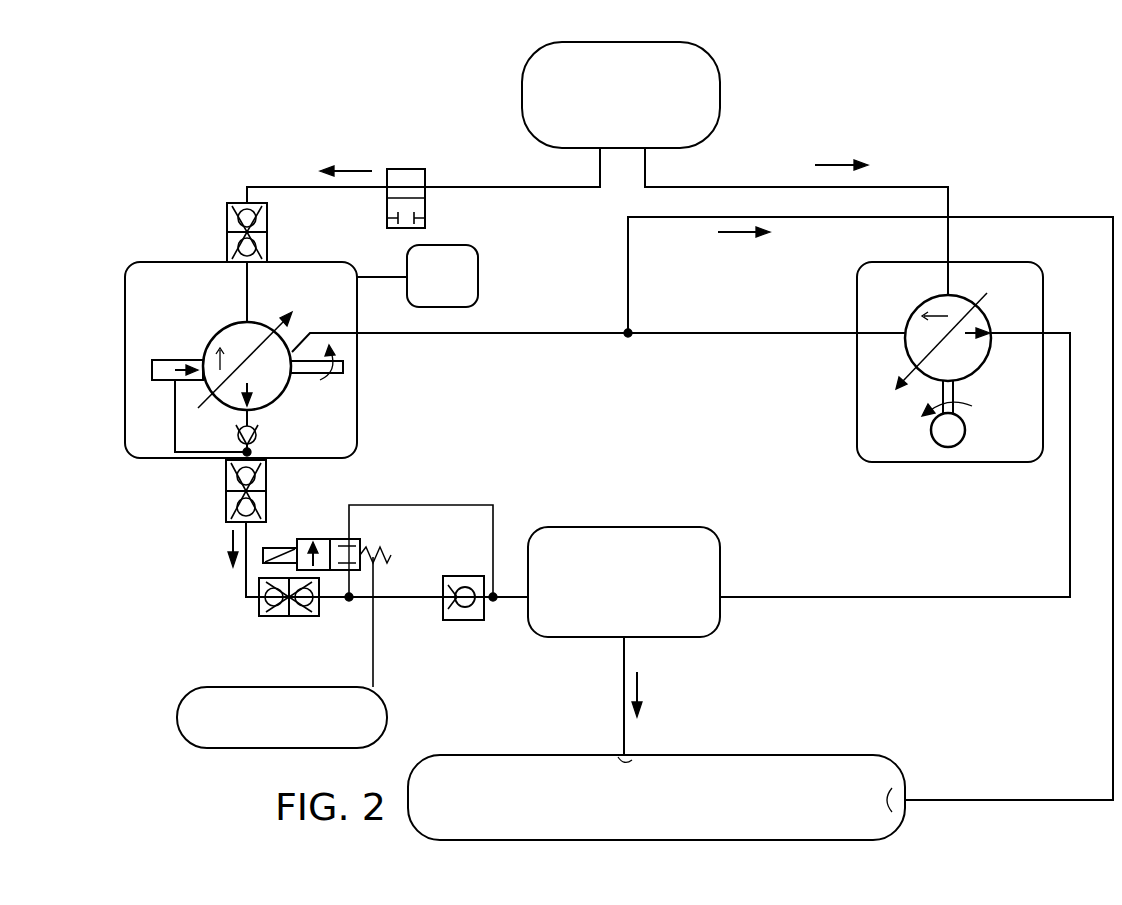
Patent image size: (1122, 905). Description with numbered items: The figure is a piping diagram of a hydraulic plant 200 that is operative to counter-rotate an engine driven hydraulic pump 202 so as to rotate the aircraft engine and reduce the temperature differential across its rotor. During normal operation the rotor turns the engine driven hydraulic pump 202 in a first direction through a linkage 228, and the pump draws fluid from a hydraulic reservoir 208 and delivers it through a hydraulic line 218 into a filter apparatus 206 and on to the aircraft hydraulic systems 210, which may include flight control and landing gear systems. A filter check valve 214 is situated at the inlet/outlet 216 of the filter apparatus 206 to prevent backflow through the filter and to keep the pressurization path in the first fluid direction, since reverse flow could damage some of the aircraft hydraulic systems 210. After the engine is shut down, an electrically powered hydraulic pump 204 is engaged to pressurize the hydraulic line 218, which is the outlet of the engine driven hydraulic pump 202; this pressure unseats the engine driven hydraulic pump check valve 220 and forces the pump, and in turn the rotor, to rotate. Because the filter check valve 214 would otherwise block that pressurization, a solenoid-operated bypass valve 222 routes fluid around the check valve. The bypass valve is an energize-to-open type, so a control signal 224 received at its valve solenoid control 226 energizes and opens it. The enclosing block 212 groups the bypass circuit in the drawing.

The hydraulic plant 200 is at (812, 82).
The engine driven hydraulic pump 202 is at (178, 300).
The electrically powered hydraulic pump 204 is at (908, 294).
The filter apparatus 206 is at (608, 625).
The hydraulic reservoir 208 is at (604, 130).
The aircraft hydraulic systems 210 is at (639, 820).
The drain circuit block 212 is at (433, 505).
The filter check valve 214 is at (443, 580).
The inlet/outlet 216 is at (518, 600).
The hydraulic line 218 is at (240, 586).
The engine driven hydraulic pump check valve 220 is at (258, 429).
The solenoid-operated bypass valve 222 is at (333, 538).
The control signal 224 is at (266, 738).
The valve solenoid control 226 is at (379, 552).
The linkage 228 is at (427, 283).